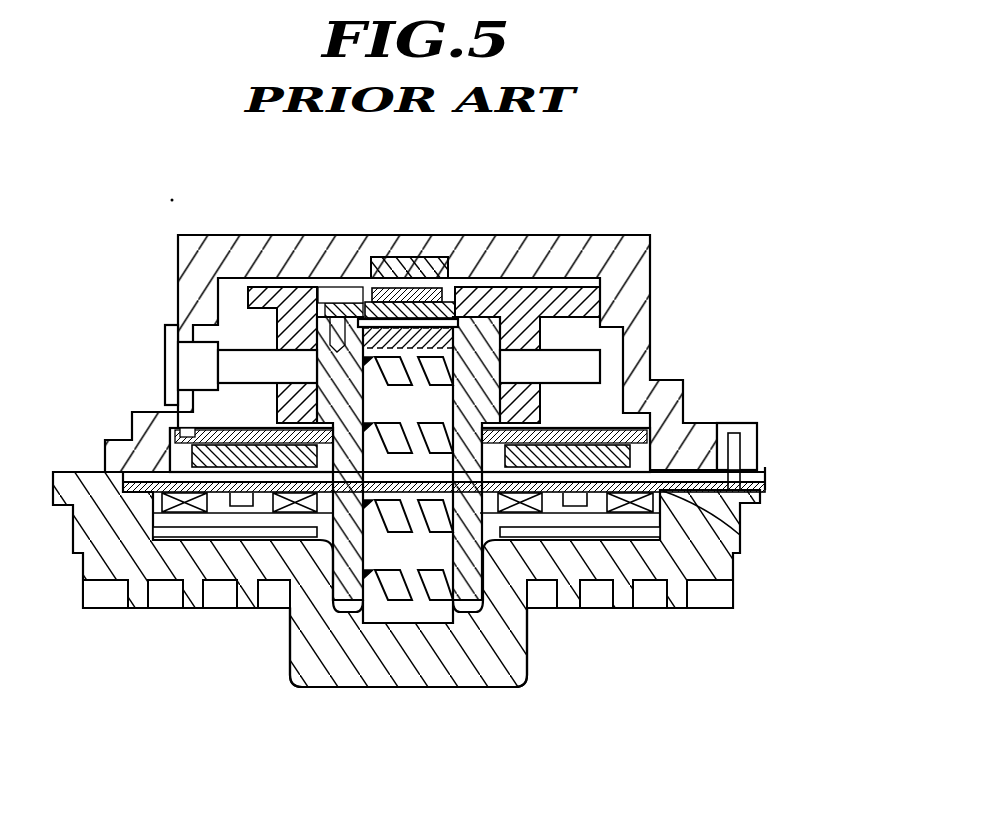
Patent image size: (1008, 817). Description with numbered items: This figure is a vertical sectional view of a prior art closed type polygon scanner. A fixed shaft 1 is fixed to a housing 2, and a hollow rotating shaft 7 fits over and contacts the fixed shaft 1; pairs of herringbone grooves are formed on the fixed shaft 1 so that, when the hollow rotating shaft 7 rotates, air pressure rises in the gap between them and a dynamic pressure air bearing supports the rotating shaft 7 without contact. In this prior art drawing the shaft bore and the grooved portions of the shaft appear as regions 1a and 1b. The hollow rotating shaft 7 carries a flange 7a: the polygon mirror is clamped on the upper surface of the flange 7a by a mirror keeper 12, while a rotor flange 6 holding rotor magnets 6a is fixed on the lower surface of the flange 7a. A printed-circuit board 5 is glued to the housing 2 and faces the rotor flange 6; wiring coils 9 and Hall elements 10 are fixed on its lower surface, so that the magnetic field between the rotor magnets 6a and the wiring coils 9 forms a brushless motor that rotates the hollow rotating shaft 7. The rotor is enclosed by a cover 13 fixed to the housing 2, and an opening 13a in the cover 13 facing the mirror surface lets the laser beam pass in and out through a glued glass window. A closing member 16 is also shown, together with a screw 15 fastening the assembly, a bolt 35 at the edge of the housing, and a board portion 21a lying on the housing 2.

The fixed shaft 1 is at (398, 690).
The rotor shaft 1a is at (413, 600).
The ventilation slots 1b is at (395, 387).
The housing 2 is at (498, 660).
The printed-circuit board 5 is at (743, 530).
The rotor flange 6 is at (182, 448).
The rotor magnets 6a is at (218, 462).
The hollow rotating shaft 7 is at (480, 610).
The flange 7a is at (528, 402).
The wiring coils 9 is at (515, 492).
The Hall elements 10 is at (573, 503).
The mirror keeper 12 is at (490, 298).
The cover 13 is at (636, 248).
The opening 13a is at (176, 368).
The screw 15 is at (175, 368).
The closing member 16 is at (712, 426).
The circuit board 21a is at (757, 500).
The terminal pin 35 is at (760, 453).